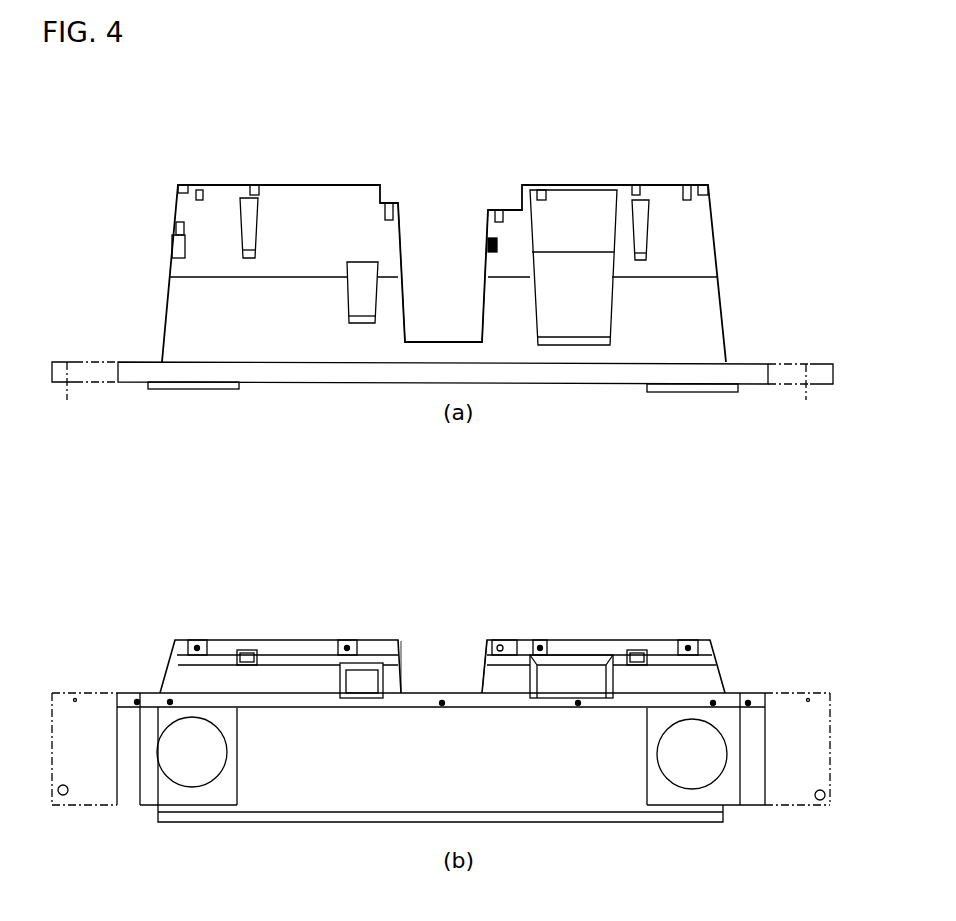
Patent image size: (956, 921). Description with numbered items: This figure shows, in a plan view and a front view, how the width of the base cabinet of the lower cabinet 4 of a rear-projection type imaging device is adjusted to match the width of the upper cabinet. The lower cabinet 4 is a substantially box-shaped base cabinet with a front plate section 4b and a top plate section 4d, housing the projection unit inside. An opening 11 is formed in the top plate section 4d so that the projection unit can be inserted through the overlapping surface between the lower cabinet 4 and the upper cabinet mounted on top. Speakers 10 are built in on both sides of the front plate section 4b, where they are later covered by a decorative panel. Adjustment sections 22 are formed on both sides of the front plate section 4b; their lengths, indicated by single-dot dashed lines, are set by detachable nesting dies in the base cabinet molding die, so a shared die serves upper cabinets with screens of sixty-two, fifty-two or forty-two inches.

The lower cabinet 4 is at (745, 235).
The front plate section 4b is at (278, 372).
The top plate section 4d is at (290, 200).
The speakers 10 is at (203, 757).
The opening 11 is at (490, 215).
The adjustment sections 22 is at (67, 378).